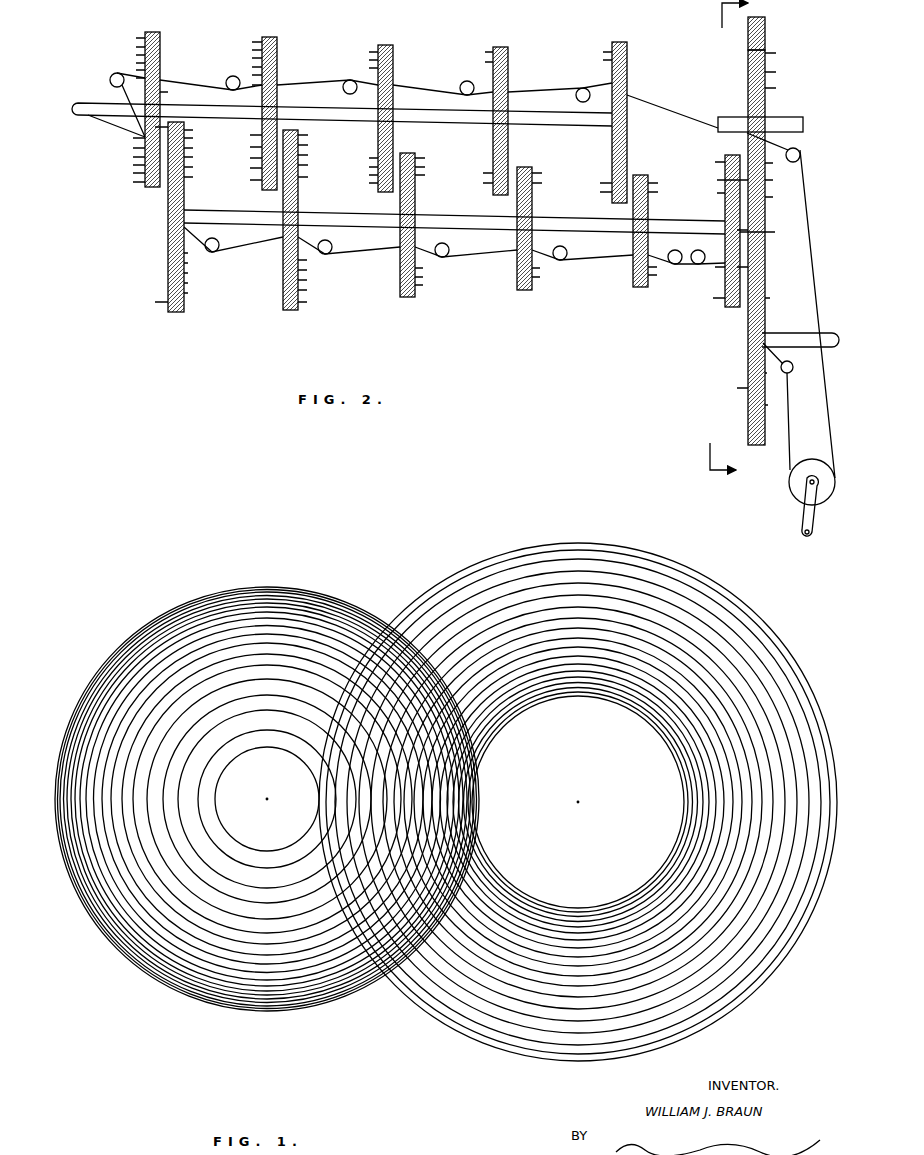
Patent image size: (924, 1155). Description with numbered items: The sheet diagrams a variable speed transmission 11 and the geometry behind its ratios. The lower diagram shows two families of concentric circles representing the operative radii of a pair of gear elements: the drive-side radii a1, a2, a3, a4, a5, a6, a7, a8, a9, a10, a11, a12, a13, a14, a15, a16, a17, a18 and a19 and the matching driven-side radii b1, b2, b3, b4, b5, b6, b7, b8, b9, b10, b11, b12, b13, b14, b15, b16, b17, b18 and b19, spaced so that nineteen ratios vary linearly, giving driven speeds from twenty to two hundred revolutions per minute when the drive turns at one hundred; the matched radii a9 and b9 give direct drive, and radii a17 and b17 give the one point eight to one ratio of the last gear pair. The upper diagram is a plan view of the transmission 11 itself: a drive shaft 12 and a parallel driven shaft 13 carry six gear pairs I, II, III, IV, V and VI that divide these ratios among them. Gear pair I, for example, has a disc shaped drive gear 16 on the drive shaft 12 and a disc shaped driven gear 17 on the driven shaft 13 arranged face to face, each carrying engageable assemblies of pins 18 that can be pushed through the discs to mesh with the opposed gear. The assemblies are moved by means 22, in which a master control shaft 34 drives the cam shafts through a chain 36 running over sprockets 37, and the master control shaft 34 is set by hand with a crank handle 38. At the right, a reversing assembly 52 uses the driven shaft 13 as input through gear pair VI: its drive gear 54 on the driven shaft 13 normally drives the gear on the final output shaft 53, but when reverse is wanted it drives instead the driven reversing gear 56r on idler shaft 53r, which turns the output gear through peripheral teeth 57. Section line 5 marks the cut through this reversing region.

In FIG. 2, the variable speed transmission 11 is at (454, 294).
In FIG. 2, the drive shaft 12 is at (97, 101).
In FIG. 2, the driven shaft 13 is at (237, 213).
In FIG. 2, the drive gear 16 is at (136, 186).
In FIG. 2, the driven gear 17 is at (168, 312).
In FIG. 2, the pins 18 is at (300, 305).
In FIG. 2, the means for urging the rings 22 is at (785, 499).
In FIG. 2, the master control shaft 34 is at (802, 493).
In FIG. 2, the chain 36 is at (813, 277).
In FIG. 2, the sprockets 37 is at (345, 92).
In FIG. 2, the crank handle 38 is at (817, 527).
In FIG. 2, the section line 5- 5 is at (738, 239).
In FIG. 2, the reversing assembly 52 is at (746, 231).
In FIG. 2, the output shaft 53 is at (828, 335).
In FIG. 2, the idler shaft 53r is at (800, 117).
In FIG. 2, the drive gear 54 is at (727, 308).
In FIG. 2, the driven reversing gear 56r is at (772, 43).
In FIG. 2, the teeth 57 is at (767, 231).
In FIG. 2, the gear pair I is at (147, 113).
In FIG. 2, the gear pair II is at (293, 76).
In FIG. 2, the gear pair III is at (409, 82).
In FIG. 2, the gear pair IV is at (526, 84).
In FIG. 2, the gear pair V is at (641, 87).
In FIG. 2, the gear pair VI is at (716, 237).
In FIG. 1, the radius a1 is at (278, 748).
In FIG. 1, the radius a2 is at (250, 732).
In FIG. 1, the radius a3 is at (223, 722).
In FIG. 1, the radius a4 is at (193, 726).
In FIG. 1, the radius a5 is at (163, 739).
In FIG. 1, the radius a6 is at (140, 764).
In FIG. 1, the radius a7 is at (123, 777).
In FIG. 1, the radius a8 is at (111, 802).
In FIG. 1, the radius a9 is at (104, 824).
In FIG. 1, the radius a10 is at (102, 845).
In FIG. 1, the radius a11 is at (97, 862).
In FIG. 1, the radius a12 is at (99, 882).
In FIG. 1, the radius a13 is at (103, 899).
In FIG. 1, the radius a14 is at (110, 917).
In FIG. 1, the radius a15 is at (119, 934).
In FIG. 1, the radius a16 is at (132, 952).
In FIG. 1, the radius a17 is at (151, 970).
In FIG. 1, the radius a18 is at (173, 986).
In FIG. 1, the radius a19 is at (204, 1001).
In FIG. 1, the radius b1 is at (523, 1055).
In FIG. 1, the radius b2 is at (553, 1053).
In FIG. 1, the radius b3 is at (579, 1045).
In FIG. 1, the radius b4 is at (608, 1031).
In FIG. 1, the radius b5 is at (634, 1014).
In FIG. 1, the radius b6 is at (661, 992).
In FIG. 1, the radius b7 is at (674, 972).
In FIG. 1, the radius b8 is at (692, 946).
In FIG. 1, the radius b9 is at (704, 921).
In FIG. 1, the radius b10 is at (710, 899).
In FIG. 1, the radius b11 is at (714, 877).
In FIG. 1, the radius b12 is at (714, 856).
In FIG. 1, the radius b13 is at (711, 839).
In FIG. 1, the radius b14 is at (707, 824).
In FIG. 1, the radius b15 is at (703, 805).
In FIG. 1, the radius b16 is at (697, 792).
In FIG. 1, the radius b17 is at (690, 779).
In FIG. 1, the radius b18 is at (682, 766).
In FIG. 1, the radius b19 is at (672, 753).